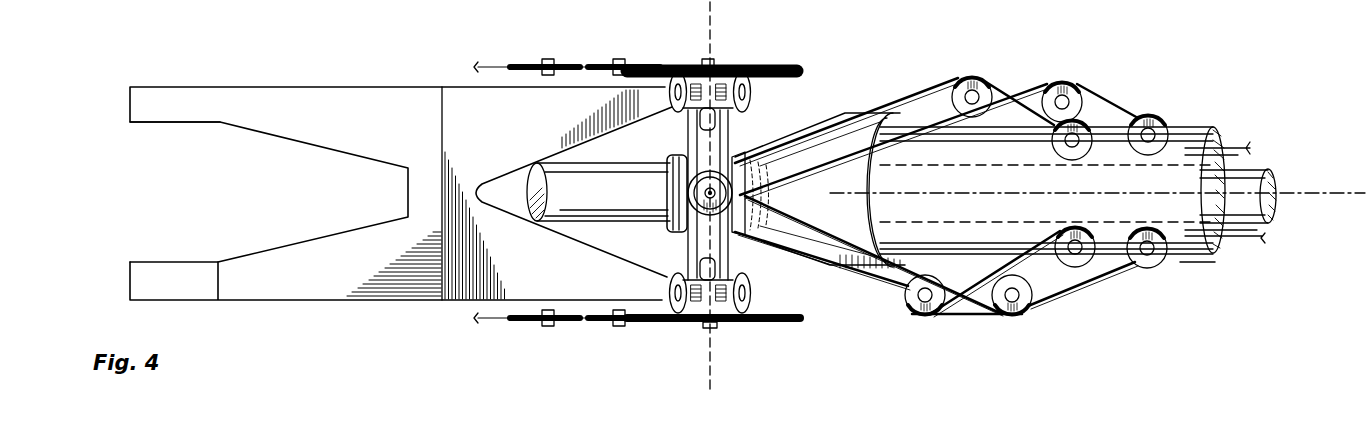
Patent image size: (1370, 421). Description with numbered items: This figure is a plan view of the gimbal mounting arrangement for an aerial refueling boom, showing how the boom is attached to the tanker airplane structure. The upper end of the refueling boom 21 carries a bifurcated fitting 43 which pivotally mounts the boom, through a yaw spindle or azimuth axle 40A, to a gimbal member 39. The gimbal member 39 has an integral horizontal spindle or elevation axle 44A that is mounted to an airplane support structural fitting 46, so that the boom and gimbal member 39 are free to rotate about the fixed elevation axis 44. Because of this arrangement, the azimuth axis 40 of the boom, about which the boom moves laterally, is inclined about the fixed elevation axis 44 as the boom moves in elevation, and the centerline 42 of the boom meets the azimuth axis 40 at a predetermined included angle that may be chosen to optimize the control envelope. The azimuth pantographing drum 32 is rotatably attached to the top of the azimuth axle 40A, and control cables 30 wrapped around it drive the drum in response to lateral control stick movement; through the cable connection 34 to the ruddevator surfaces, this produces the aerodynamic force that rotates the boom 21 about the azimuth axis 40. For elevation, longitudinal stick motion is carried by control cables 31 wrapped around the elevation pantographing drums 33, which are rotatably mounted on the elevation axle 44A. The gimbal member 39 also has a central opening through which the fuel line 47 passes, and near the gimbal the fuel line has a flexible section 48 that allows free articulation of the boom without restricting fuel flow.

The refueling boom 21 is at (1199, 268).
The control cables 30 is at (745, 122).
The control cables 31 is at (494, 62).
The azimuth pantographing drum 32 is at (692, 228).
The elevation pantographing drums 33 is at (772, 326).
The cable connection 34 is at (1034, 83).
The gimbal member 39 is at (730, 246).
The azimuth axis 40 is at (748, 155).
The azimuth axle 40A is at (672, 160).
The centerline 42 is at (1290, 188).
The bifurcated fitting 43 is at (833, 172).
The elevation axis 44 is at (708, 364).
The elevation axle 44A is at (711, 325).
The airplane support structural fitting 46 is at (378, 150).
The fuel line 47 is at (558, 180).
The flexible section 48 is at (652, 233).